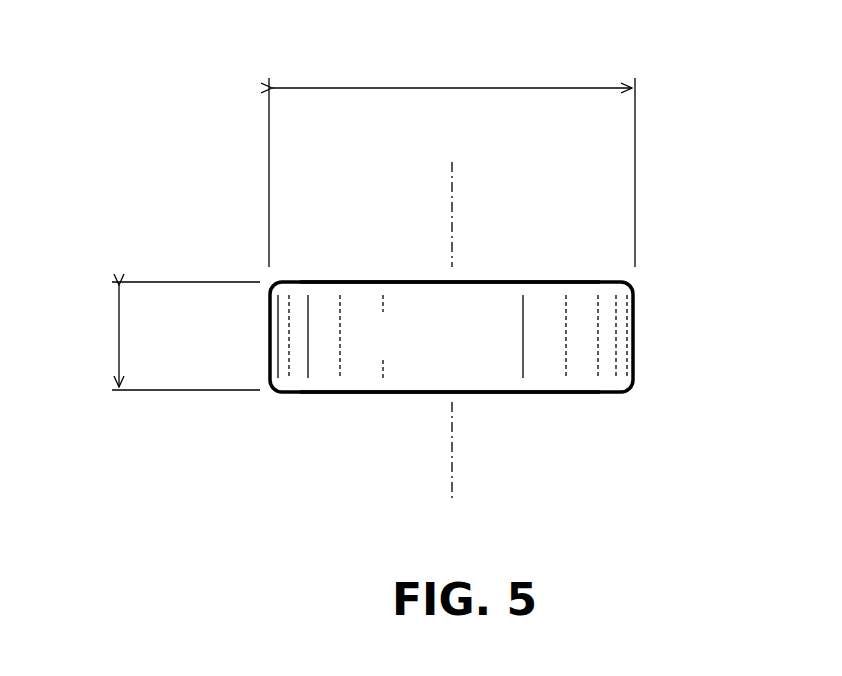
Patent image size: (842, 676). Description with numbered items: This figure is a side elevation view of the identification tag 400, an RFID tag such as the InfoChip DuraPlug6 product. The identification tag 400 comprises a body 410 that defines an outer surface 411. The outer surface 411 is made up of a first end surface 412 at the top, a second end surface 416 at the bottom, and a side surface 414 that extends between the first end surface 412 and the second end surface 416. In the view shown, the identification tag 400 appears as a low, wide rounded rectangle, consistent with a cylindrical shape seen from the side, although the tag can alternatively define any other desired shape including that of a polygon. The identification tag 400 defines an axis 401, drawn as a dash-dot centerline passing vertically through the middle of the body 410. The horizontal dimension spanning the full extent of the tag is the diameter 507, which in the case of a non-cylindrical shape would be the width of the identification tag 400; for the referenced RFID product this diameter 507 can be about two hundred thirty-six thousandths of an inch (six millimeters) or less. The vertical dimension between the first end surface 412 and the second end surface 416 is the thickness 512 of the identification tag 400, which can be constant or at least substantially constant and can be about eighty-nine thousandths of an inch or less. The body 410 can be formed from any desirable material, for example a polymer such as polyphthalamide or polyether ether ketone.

The identification tag 400 is at (214, 222).
The axis 401 is at (452, 466).
The body 410 is at (270, 338).
The outer surface 411 is at (622, 363).
The first end surface 412 is at (507, 278).
The side surface 414 is at (590, 325).
The second end surface 416 is at (380, 396).
The diameter 507 is at (452, 88).
The thickness 512 is at (118, 333).